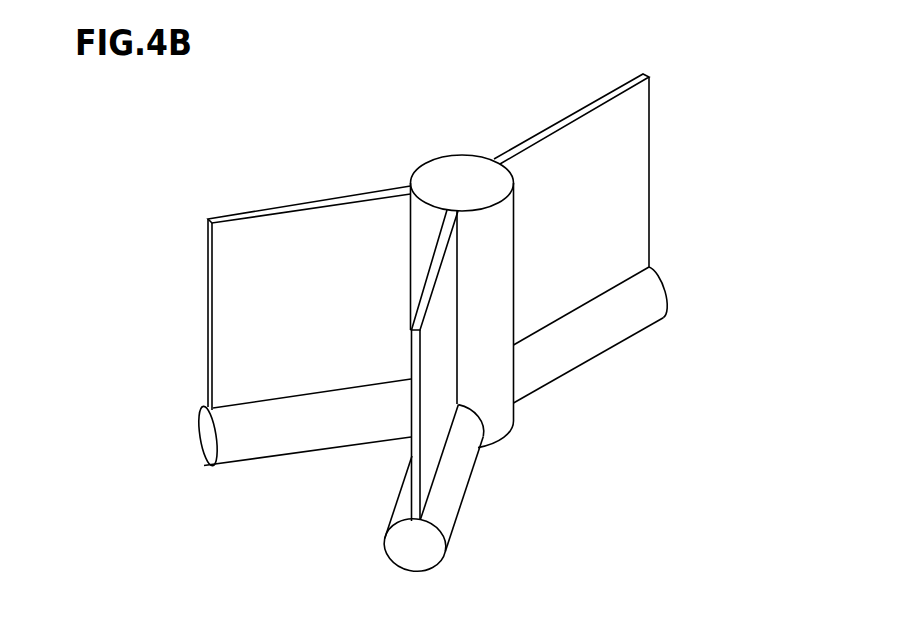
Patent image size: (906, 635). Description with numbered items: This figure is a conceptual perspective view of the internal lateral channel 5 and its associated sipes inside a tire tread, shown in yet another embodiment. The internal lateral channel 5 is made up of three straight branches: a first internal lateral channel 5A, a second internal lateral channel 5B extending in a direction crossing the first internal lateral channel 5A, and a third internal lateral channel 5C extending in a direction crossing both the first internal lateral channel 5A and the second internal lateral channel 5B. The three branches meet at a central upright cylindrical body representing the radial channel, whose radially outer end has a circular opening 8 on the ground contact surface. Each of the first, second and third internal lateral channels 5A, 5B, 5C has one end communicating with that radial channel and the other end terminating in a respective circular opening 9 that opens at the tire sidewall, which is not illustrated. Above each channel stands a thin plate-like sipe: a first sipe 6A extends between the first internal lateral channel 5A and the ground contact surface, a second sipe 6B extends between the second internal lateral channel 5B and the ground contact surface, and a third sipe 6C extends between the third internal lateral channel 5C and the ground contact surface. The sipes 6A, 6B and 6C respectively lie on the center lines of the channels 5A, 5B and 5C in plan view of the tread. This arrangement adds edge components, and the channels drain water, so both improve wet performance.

The internal lateral channel 5 is at (240, 470).
The first internal lateral channel 5A is at (607, 328).
The second internal lateral channel 5B is at (448, 490).
The third internal lateral channel 5C is at (290, 430).
The first sipe 6A is at (613, 172).
The second sipe 6B is at (435, 363).
The third sipe 6C is at (257, 278).
The opening 8 is at (462, 183).
The opening 9 is at (668, 287).